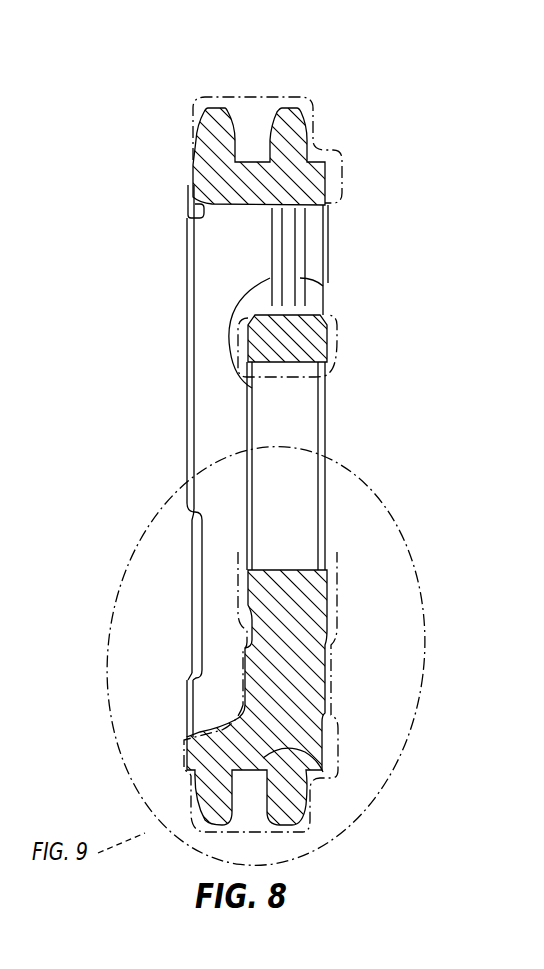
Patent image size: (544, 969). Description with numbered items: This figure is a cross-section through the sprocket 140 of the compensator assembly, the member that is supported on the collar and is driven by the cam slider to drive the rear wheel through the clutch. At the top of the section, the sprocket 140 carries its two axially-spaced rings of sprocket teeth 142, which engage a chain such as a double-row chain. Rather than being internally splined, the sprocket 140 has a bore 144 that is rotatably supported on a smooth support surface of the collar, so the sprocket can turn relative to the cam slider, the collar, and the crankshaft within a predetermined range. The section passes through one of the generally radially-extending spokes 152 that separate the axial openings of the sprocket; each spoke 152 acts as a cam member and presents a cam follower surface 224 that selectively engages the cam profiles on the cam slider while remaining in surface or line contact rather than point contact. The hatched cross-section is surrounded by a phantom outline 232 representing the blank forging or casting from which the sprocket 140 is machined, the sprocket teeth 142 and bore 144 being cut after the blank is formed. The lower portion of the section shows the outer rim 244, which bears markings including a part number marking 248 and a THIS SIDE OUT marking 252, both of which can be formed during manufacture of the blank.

The sprocket 140 is at (328, 410).
The sprocket teeth 142 is at (260, 121).
The bore 144 is at (332, 334).
The spoke 152 is at (340, 692).
The cam follower surface 224 is at (272, 697).
The phantom outline 232 is at (301, 140).
The outer rim 244 is at (341, 812).
The part number marking 248 is at (163, 173).
The THIS SIDE OUT marking 252 is at (139, 588).